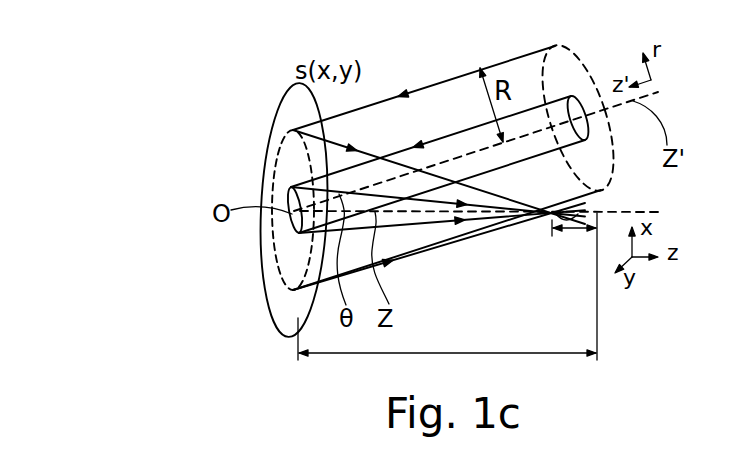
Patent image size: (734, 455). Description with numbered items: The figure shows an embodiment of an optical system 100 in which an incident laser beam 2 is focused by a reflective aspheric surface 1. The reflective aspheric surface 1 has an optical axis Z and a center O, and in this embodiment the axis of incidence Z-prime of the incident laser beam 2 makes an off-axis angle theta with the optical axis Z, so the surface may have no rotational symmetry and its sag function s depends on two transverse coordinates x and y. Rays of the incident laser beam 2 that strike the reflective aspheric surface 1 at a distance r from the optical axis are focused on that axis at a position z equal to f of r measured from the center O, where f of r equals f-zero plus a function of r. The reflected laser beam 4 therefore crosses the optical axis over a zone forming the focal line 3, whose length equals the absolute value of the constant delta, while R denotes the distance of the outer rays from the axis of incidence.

The reflective aspheric surface 1 is at (276, 262).
The incident laser beam 2 is at (421, 88).
The focal line 3 is at (575, 213).
The reflected laser beam 4 is at (332, 150).
The optical system 100 is at (286, 347).